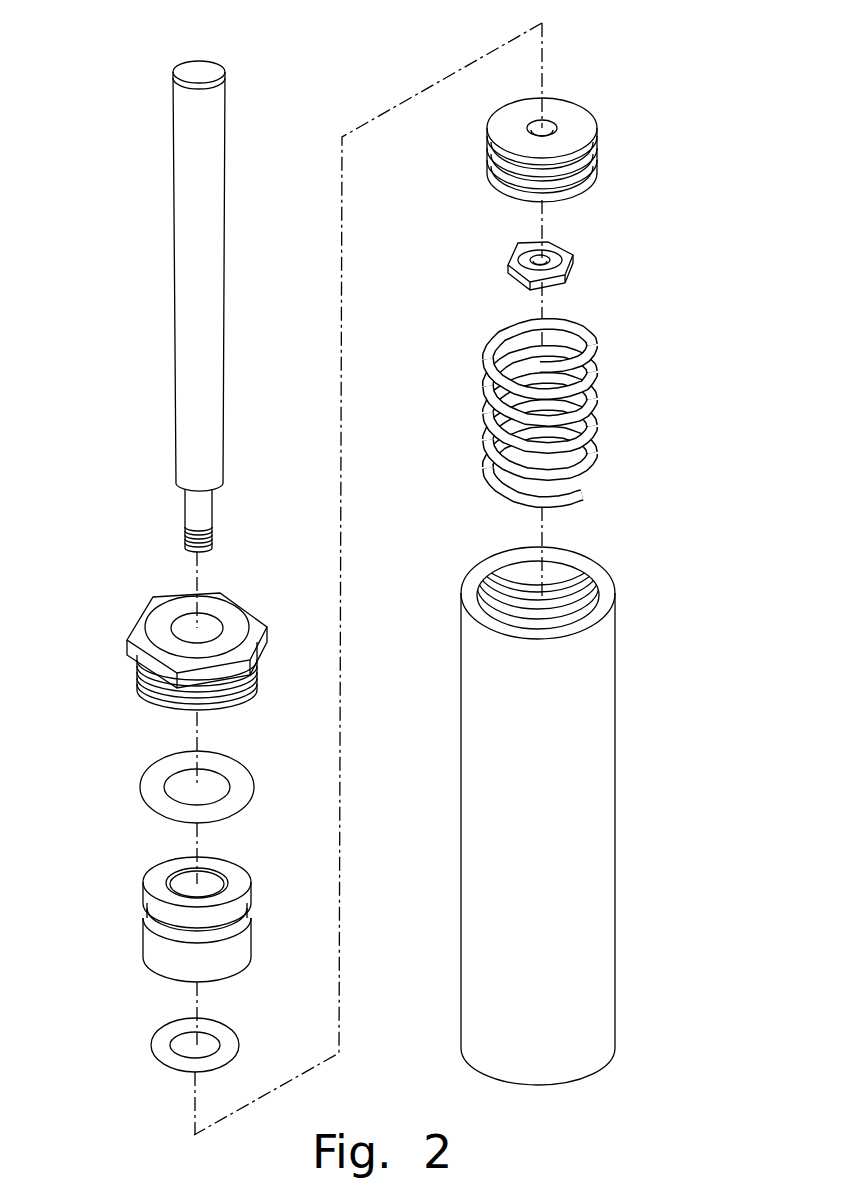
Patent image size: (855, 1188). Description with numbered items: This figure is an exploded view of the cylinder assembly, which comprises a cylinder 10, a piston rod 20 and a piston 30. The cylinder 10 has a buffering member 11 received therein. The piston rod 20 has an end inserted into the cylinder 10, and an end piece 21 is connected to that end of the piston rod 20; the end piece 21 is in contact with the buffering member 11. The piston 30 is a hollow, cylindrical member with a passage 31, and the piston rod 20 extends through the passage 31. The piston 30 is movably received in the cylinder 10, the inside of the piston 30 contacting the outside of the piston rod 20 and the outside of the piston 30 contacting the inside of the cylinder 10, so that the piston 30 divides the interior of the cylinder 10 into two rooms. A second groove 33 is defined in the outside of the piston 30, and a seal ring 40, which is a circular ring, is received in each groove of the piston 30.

The cylinder 10 is at (580, 793).
The buffering member 11 is at (588, 442).
The piston rod 20 is at (183, 294).
The end piece 21 is at (571, 140).
The piston 30 is at (133, 904).
The passage 31 is at (187, 883).
The second groove 33 is at (157, 922).
The seal ring 40 is at (153, 787).